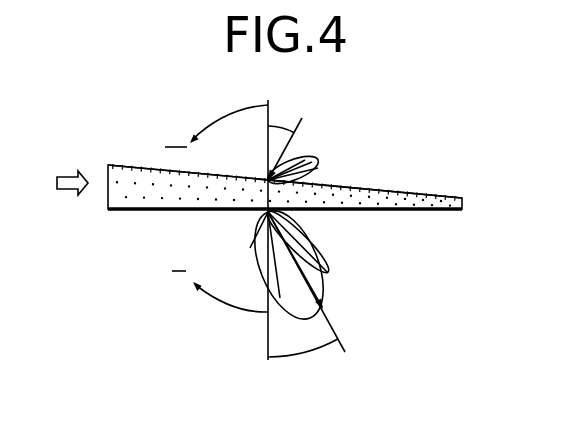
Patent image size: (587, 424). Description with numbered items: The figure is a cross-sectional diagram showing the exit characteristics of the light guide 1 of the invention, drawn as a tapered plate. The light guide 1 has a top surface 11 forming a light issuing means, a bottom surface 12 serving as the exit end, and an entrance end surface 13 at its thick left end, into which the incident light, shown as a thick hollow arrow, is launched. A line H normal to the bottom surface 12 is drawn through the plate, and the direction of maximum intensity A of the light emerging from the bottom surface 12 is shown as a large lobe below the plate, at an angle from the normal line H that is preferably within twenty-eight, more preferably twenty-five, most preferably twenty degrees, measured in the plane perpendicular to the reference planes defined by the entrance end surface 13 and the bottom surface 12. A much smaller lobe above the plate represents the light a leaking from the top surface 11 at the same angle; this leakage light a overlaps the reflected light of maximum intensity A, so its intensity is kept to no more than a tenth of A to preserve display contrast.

The light guide 1 is at (436, 170).
The top surface 11 is at (133, 167).
The bottom surface 12 is at (132, 212).
The entrance end surface 13 is at (107, 200).
The light leaking from the top surface a is at (265, 176).
The maximum intensity A is at (310, 280).
The line normal to the bottom surface H is at (268, 332).